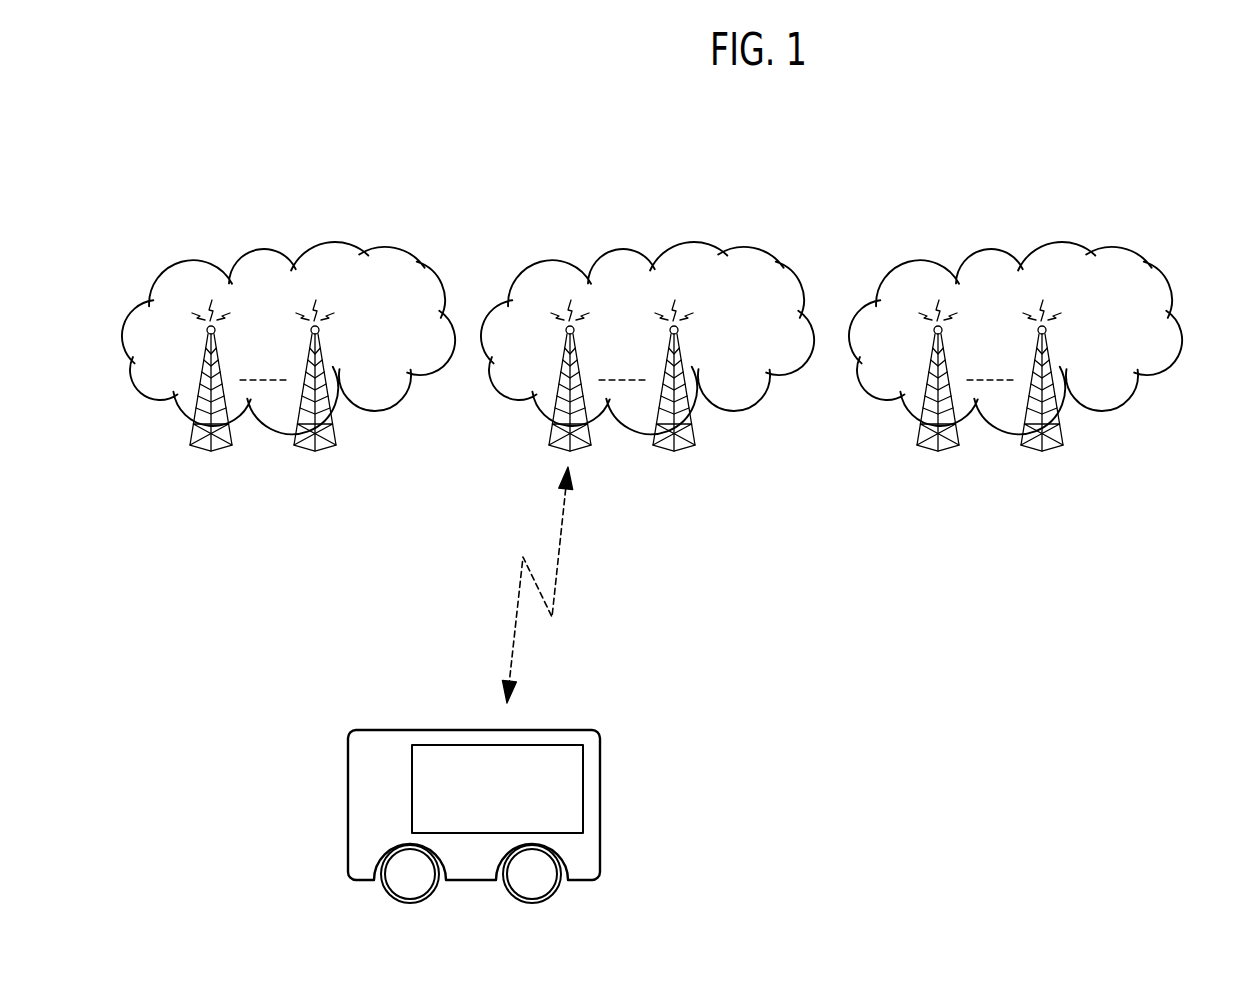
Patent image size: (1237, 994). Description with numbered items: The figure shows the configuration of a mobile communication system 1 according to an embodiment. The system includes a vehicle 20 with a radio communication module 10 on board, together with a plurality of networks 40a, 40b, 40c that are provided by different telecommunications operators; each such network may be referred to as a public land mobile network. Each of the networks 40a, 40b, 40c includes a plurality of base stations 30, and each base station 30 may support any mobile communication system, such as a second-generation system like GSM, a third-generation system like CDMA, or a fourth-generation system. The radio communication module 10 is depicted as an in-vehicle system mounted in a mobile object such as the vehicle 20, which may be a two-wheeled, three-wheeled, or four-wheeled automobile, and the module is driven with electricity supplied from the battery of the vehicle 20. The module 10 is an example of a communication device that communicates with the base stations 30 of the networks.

The mobile communication system 1 is at (374, 119).
The radio communication module 10 is at (483, 833).
The vehicle 20 is at (557, 727).
The base station 30 is at (223, 360).
The network 40a is at (337, 241).
The network 40b is at (733, 241).
The network 40c is at (1072, 239).